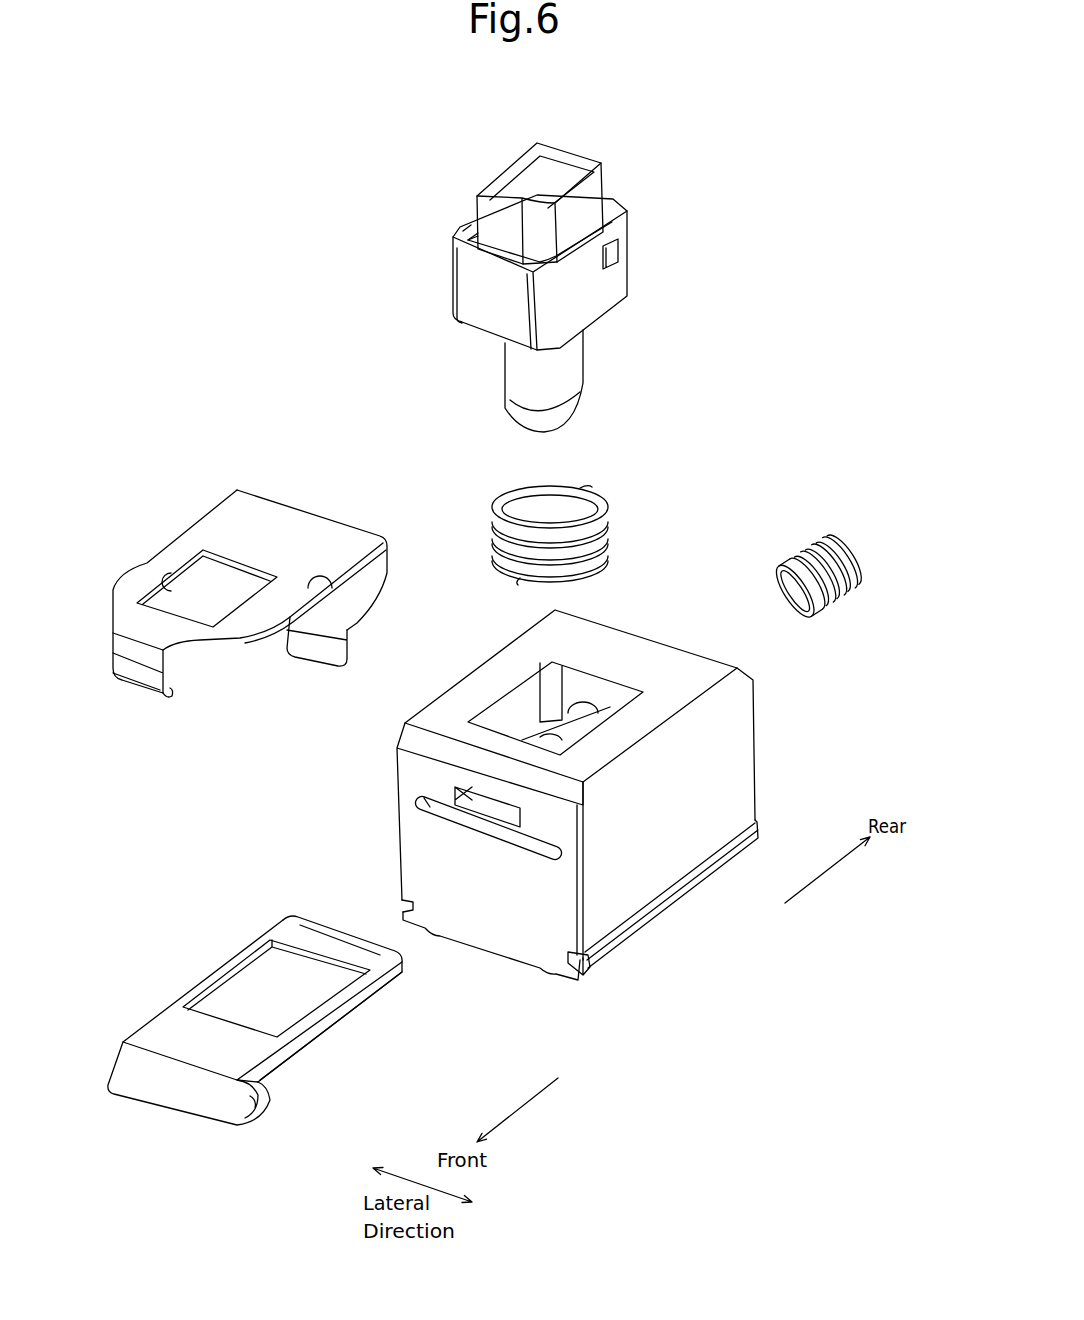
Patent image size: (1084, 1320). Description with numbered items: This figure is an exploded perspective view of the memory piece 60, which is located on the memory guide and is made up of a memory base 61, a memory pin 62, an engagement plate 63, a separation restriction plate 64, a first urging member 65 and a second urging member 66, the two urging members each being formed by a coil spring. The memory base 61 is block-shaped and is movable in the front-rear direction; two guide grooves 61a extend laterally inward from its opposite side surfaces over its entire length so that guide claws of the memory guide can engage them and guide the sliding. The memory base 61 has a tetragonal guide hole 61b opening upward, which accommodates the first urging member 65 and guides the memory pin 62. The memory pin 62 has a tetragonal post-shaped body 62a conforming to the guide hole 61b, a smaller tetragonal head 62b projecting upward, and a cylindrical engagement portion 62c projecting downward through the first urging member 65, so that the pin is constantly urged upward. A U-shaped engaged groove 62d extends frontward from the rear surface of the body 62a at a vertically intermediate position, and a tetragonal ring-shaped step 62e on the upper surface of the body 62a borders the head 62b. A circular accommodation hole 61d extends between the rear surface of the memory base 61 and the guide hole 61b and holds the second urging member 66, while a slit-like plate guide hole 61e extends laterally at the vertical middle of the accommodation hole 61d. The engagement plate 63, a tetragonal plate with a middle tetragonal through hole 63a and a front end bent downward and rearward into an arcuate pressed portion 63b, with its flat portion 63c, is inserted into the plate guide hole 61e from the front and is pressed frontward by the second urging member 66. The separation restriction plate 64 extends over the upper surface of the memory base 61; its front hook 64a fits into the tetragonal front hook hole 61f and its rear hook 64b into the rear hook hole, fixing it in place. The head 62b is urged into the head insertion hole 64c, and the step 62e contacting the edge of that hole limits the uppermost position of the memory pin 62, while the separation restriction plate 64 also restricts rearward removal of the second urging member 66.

The memory piece 60 is at (774, 359).
The memory base 61 is at (748, 762).
The guide grooves 61a is at (410, 903).
The guide hole 61b is at (512, 703).
The accommodation hole 61d is at (588, 708).
The plate guide hole 61e is at (492, 830).
The front hook hole 61f is at (468, 797).
The memory pin 62 is at (457, 273).
The body 62a is at (477, 310).
The head 62b is at (553, 155).
The engagement portion 62c is at (578, 370).
The engaged groove 62d is at (618, 245).
The step 62e is at (460, 238).
The engagement plate 63 is at (255, 1055).
The through hole 63a is at (218, 983).
The pressed portion 63b is at (210, 1105).
The flat portion 63c is at (325, 933).
The separation restriction plate 64 is at (207, 522).
The front hook 64a is at (168, 697).
The rear hook 64b is at (330, 663).
The head insertion hole 64c is at (173, 580).
The first urging member 65 is at (610, 533).
The second urging member 66 is at (845, 600).